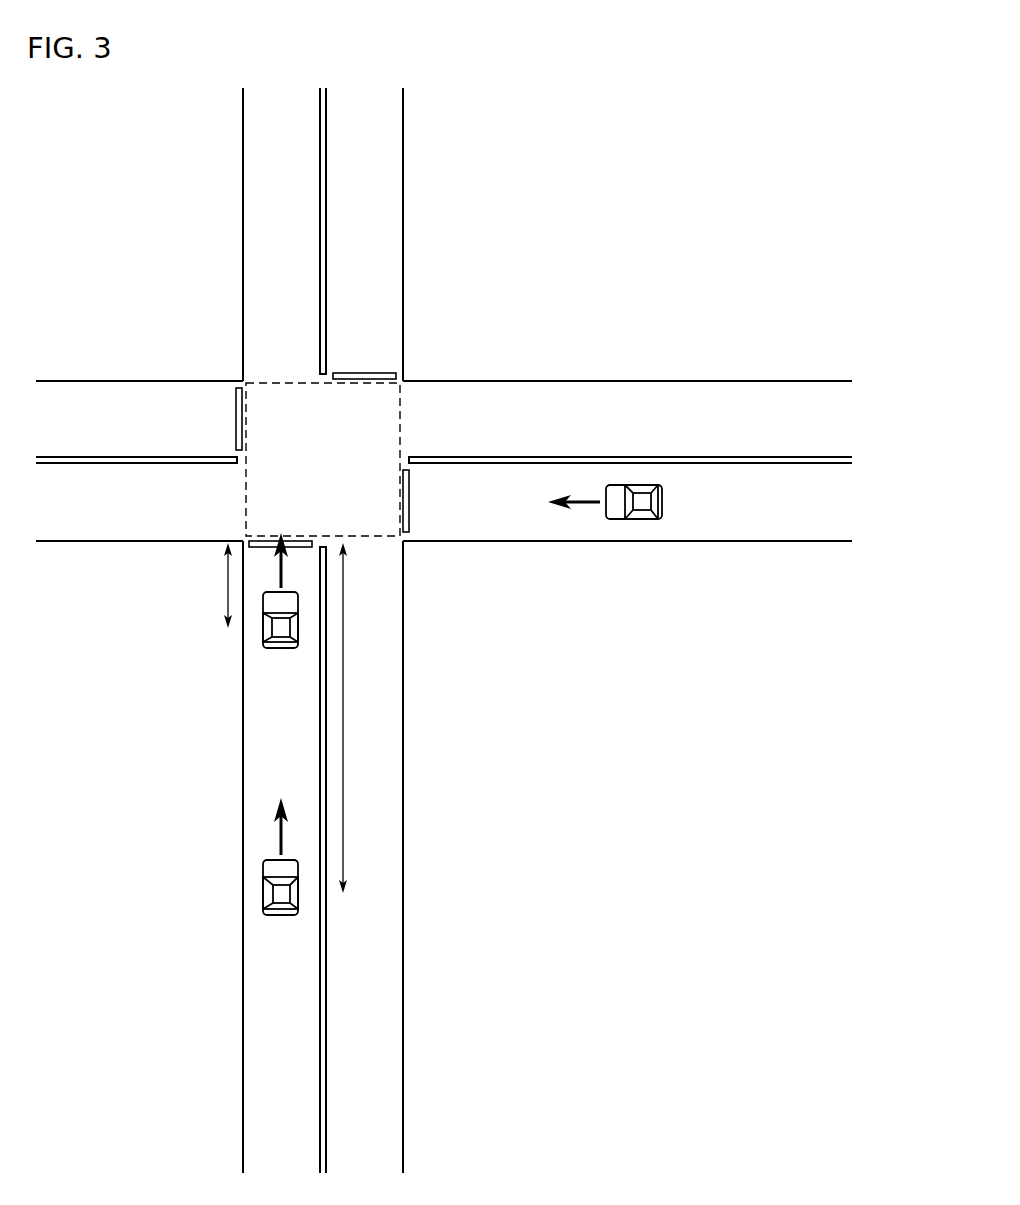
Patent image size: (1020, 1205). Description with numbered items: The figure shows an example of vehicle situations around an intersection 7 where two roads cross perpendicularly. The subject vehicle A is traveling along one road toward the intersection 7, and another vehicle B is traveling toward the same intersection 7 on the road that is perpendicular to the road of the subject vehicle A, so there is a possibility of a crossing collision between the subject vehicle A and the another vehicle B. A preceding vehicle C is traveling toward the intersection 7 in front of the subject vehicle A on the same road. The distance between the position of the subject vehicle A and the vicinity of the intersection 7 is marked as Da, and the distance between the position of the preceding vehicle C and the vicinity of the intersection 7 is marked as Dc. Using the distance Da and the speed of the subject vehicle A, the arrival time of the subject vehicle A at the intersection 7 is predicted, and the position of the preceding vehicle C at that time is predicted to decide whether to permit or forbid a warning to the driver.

The intersection 7 is at (401, 415).
The subject vehicle A is at (263, 893).
The another vehicle B is at (638, 520).
The preceding vehicle C is at (263, 630).
The distance between the subject vehicle and the vicinity of the intersection Da is at (343, 719).
The distance between the preceding vehicle and the vicinity of the intersection Dc is at (228, 583).